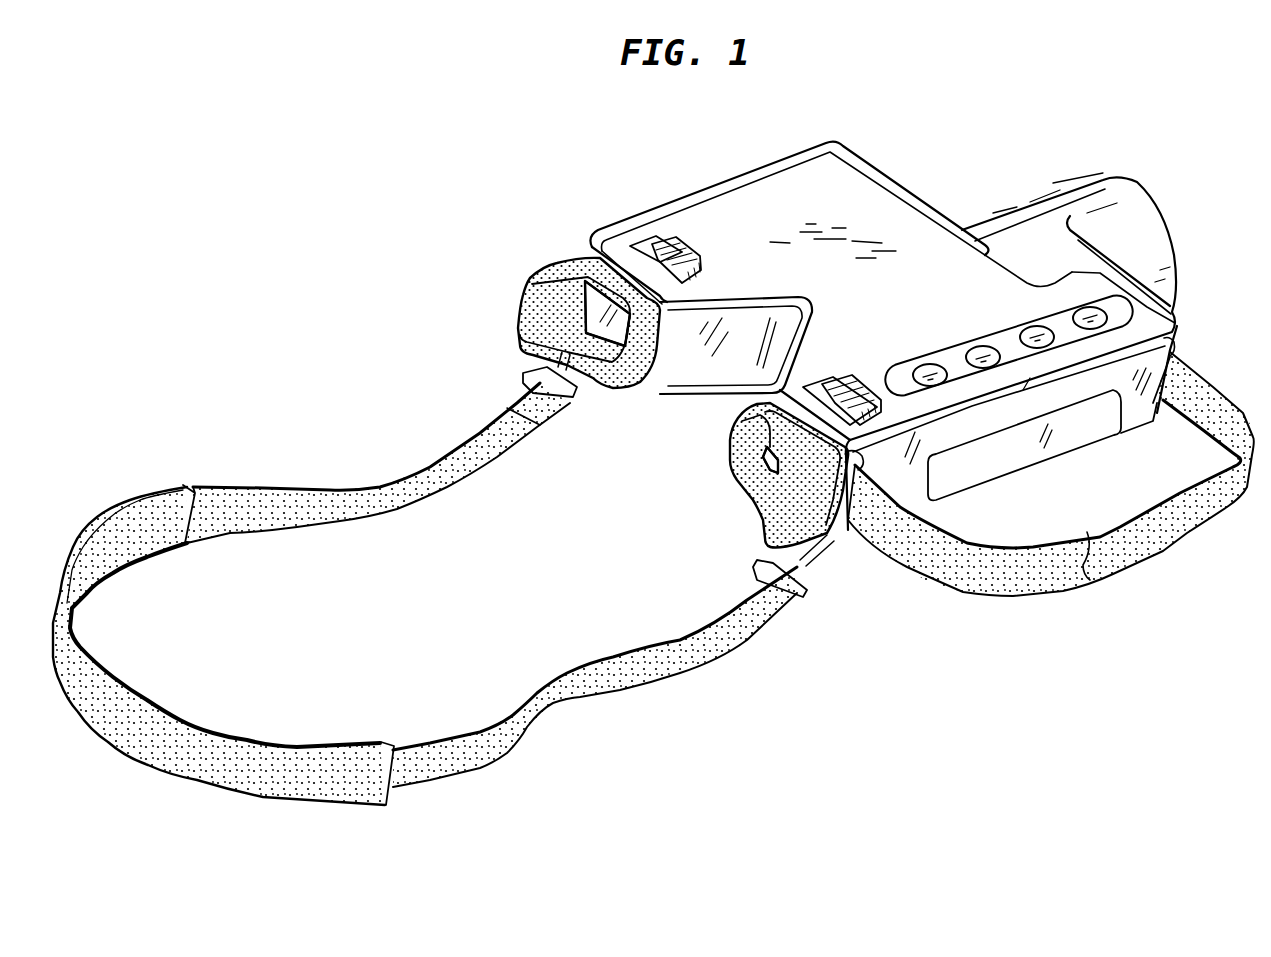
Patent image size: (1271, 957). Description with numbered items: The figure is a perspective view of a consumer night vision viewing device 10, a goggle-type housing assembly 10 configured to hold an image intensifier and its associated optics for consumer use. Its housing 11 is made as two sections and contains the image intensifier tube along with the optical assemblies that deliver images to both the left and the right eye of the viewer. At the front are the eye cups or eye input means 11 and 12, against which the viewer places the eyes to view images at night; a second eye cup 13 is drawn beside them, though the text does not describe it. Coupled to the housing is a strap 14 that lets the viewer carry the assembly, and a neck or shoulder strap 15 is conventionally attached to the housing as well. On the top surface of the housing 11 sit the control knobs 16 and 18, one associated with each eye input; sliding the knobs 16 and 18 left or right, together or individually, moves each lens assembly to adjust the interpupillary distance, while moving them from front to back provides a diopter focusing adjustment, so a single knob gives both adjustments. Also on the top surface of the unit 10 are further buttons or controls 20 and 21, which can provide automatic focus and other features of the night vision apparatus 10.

The night vision viewing device 10 is at (450, 288).
The housing 11 is at (737, 210).
The eye cup 12 is at (737, 440).
The left ear speaker 13 is at (563, 263).
The strap 14 is at (965, 555).
The neck or shoulder strap 15 is at (620, 652).
The control knob 16 is at (670, 240).
The control knob 18 is at (840, 382).
The button 20 is at (930, 370).
The button 21 is at (980, 352).